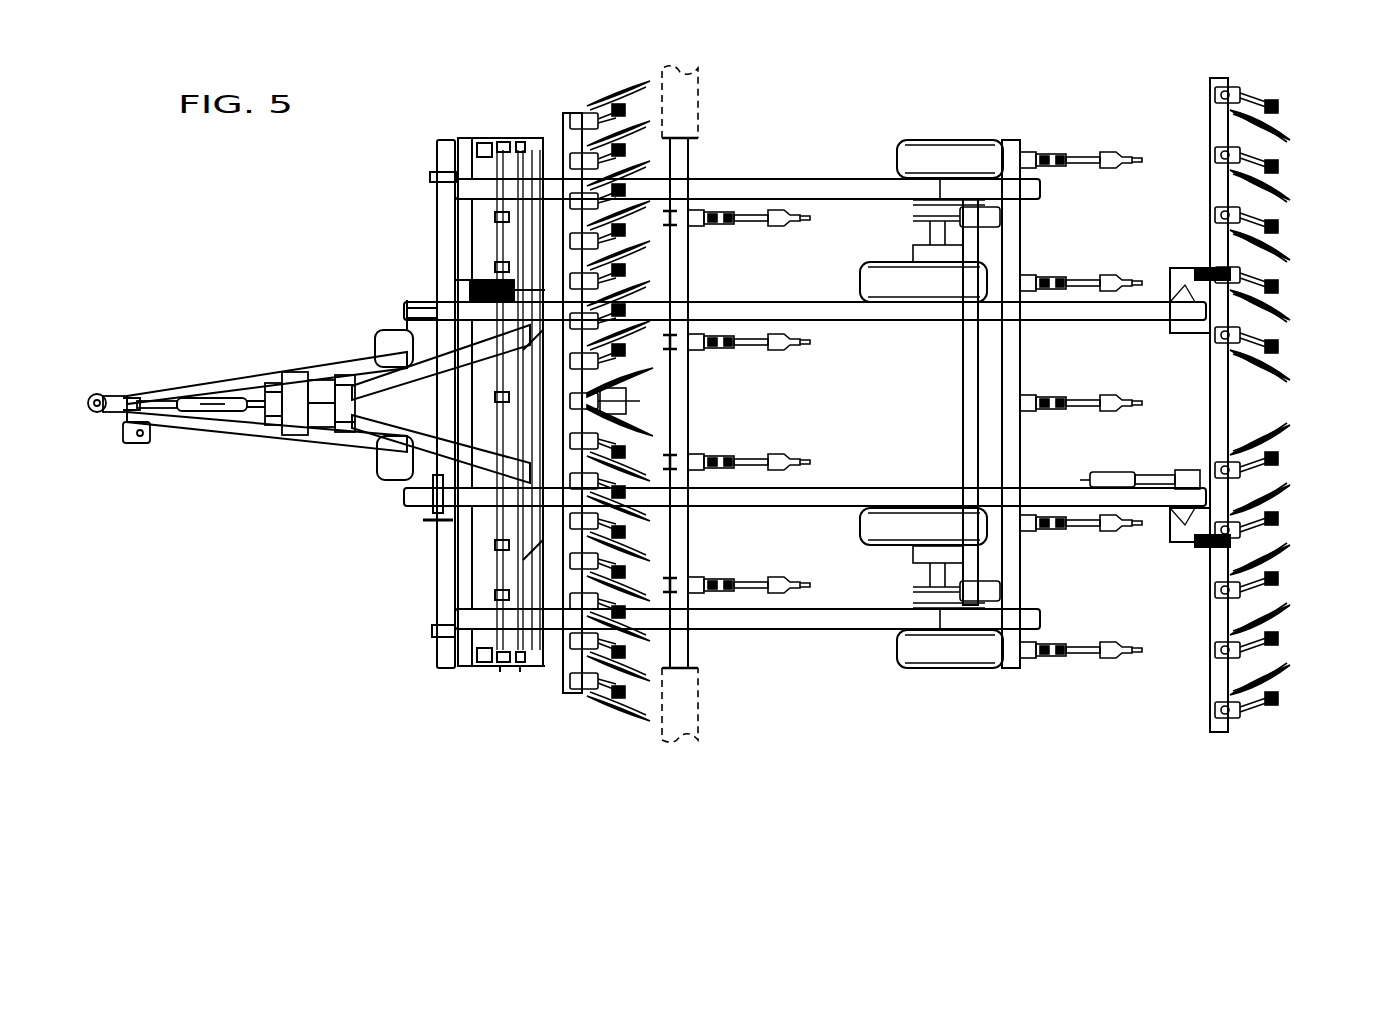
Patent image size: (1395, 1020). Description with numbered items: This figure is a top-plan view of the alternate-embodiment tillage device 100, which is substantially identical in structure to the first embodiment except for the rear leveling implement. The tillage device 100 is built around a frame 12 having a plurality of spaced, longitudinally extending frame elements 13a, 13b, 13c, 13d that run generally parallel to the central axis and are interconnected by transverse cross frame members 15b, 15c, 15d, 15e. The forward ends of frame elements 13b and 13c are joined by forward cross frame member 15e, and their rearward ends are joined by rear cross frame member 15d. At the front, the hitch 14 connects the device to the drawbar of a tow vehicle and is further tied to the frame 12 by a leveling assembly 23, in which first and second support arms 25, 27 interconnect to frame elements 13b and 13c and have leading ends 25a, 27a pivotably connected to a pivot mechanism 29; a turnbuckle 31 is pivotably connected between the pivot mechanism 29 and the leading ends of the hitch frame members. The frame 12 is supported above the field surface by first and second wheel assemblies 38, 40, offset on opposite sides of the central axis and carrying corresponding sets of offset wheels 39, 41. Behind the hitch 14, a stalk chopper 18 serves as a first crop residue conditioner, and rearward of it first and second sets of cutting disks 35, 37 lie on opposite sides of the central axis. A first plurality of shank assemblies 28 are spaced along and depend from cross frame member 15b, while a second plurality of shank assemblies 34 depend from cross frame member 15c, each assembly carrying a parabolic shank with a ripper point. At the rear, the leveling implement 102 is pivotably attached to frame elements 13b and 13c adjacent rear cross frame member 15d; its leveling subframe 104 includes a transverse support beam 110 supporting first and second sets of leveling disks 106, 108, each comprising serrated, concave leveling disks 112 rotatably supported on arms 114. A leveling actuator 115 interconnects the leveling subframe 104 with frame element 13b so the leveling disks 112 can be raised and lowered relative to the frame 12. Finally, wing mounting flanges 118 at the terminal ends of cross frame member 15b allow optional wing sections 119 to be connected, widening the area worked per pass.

The frame 12 is at (836, 178).
The frame element 13a is at (818, 630).
The frame element 13b is at (846, 490).
The frame element 13c is at (846, 322).
The frame element 13d is at (740, 184).
The hitch 14 is at (97, 395).
The cross frame member 15b is at (687, 402).
The cross frame member 15c is at (1003, 370).
The rear cross frame member 15d is at (1162, 352).
The forward cross frame member 15e is at (408, 480).
The stalk chopper 18 is at (500, 682).
The leveling assembly 23 is at (270, 447).
The first support arm 25 is at (398, 368).
The leading end of first support arm 25a is at (355, 352).
The second support arm 27 is at (400, 442).
The leading end of second support arm 27a is at (353, 437).
The shank assembly 28 is at (763, 233).
The pivot mechanism 29 is at (283, 378).
The turnbuckle 31 is at (206, 422).
The shank assembly 34 is at (1078, 136).
The first set of cutting disks 35 is at (648, 268).
The second set of cutting disks 37 is at (648, 540).
The first wheel assembly 38 is at (888, 238).
The offset wheels 39 is at (947, 146).
The second wheel assembly 40 is at (888, 572).
The offset wheels 41 is at (872, 284).
The tillage device 100 is at (300, 634).
The leveling implement 102 is at (1252, 50).
The leveling subframe 104 is at (1217, 74).
The first set of leveling disks 106 is at (1293, 176).
The second set of leveling disks 108 is at (1293, 591).
The support beam 110 is at (1213, 121).
The leveling disk 112 is at (1286, 135).
The arm 114 is at (1246, 97).
The leveling actuator 115 is at (1128, 468).
The wing mounting flange 118 is at (698, 139).
The optional wing section 119 is at (697, 106).